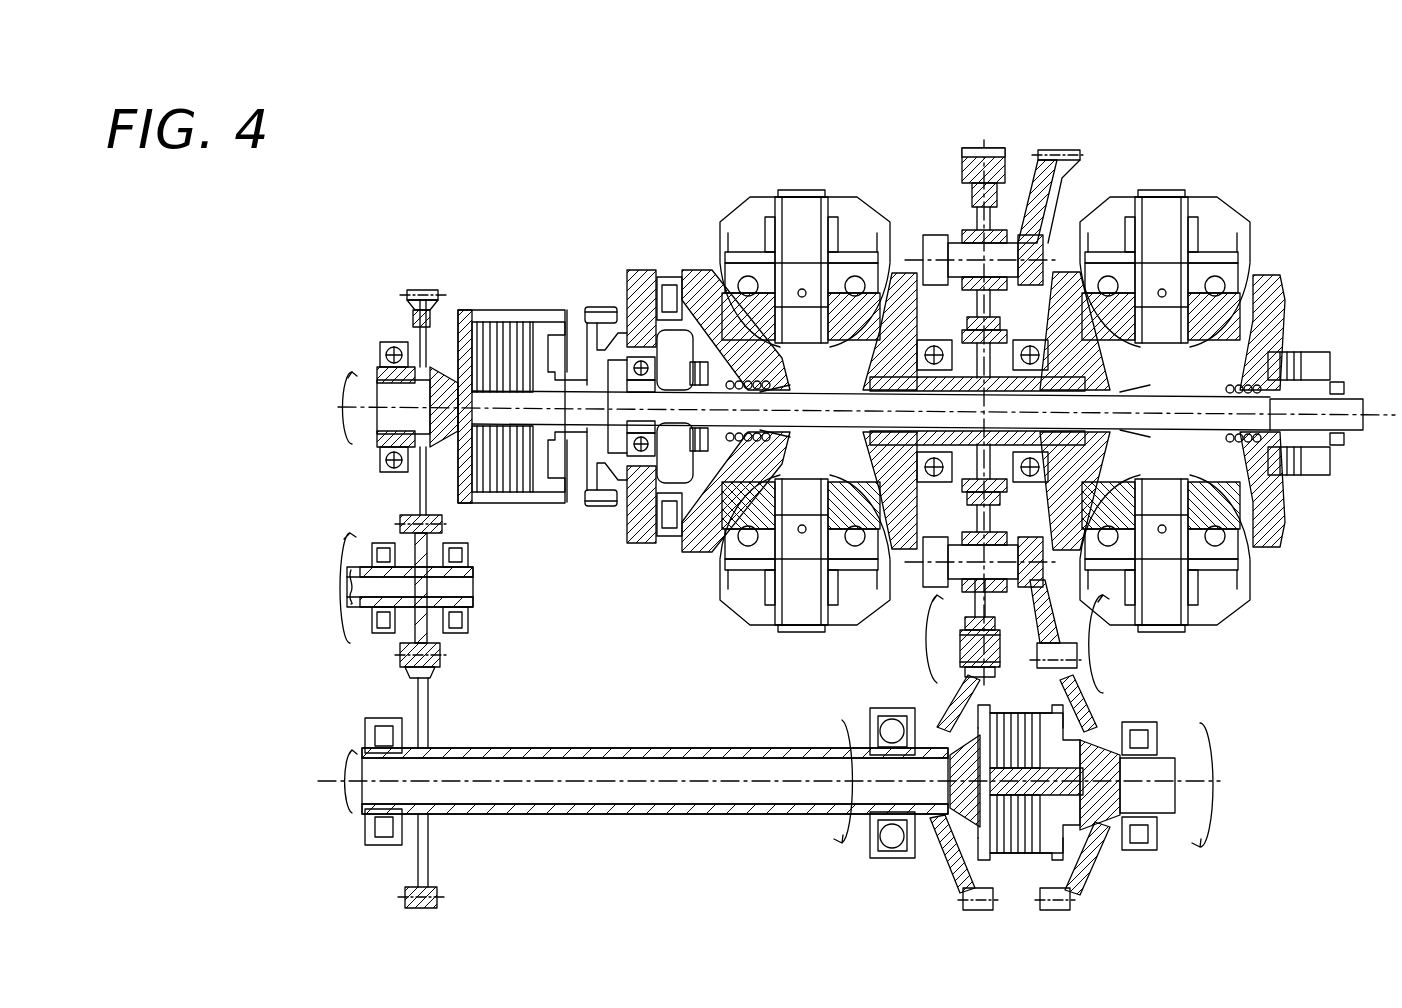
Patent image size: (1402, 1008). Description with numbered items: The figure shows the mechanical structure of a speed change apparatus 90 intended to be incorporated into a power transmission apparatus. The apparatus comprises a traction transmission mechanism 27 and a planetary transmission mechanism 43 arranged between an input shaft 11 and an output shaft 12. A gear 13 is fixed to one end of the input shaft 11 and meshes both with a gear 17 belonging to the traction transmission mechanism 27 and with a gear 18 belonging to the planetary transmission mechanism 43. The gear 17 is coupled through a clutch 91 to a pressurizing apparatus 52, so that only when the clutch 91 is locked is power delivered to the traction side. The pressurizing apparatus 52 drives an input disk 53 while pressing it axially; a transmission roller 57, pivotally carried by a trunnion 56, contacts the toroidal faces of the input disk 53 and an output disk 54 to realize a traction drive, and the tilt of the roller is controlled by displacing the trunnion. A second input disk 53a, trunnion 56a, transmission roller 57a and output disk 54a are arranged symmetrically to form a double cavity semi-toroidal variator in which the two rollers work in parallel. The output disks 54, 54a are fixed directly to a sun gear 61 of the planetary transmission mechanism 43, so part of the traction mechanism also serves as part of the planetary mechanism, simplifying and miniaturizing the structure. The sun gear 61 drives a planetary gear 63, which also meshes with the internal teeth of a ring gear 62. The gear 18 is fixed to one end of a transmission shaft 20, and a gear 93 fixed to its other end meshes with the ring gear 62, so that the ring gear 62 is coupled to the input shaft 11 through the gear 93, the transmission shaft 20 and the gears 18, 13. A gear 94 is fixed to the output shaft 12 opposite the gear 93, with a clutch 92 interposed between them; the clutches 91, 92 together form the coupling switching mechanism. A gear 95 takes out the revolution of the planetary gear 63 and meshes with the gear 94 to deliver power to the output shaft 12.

The speed change apparatus 90 is at (461, 129).
The traction transmission mechanism 27 is at (822, 371).
The planetary transmission mechanism 43 is at (977, 369).
The ring gear 62 is at (993, 165).
The gear 95 is at (1085, 166).
The trunnion 56 is at (803, 197).
The trunnion 56a is at (1165, 197).
The pressurizing apparatus 52 is at (643, 270).
The input disk 53 is at (696, 270).
The input disk 53a is at (1268, 275).
The output disk 54 is at (910, 273).
The output disk 54a is at (1065, 272).
The transmission roller 57 is at (790, 412).
The transmission roller 57a is at (1152, 413).
The planetary gear 63 is at (968, 220).
The sun gear 61 is at (1006, 350).
The gear 17 is at (420, 326).
The clutch 91 is at (495, 322).
The input shaft 11 is at (360, 567).
The gear 13 is at (438, 650).
The transmission shaft 20 is at (652, 748).
The gear 18 is at (428, 866).
The output shaft 12 is at (1168, 815).
The clutch 92 is at (1018, 860).
The gear 93 is at (960, 882).
The gear 94 is at (1087, 730).